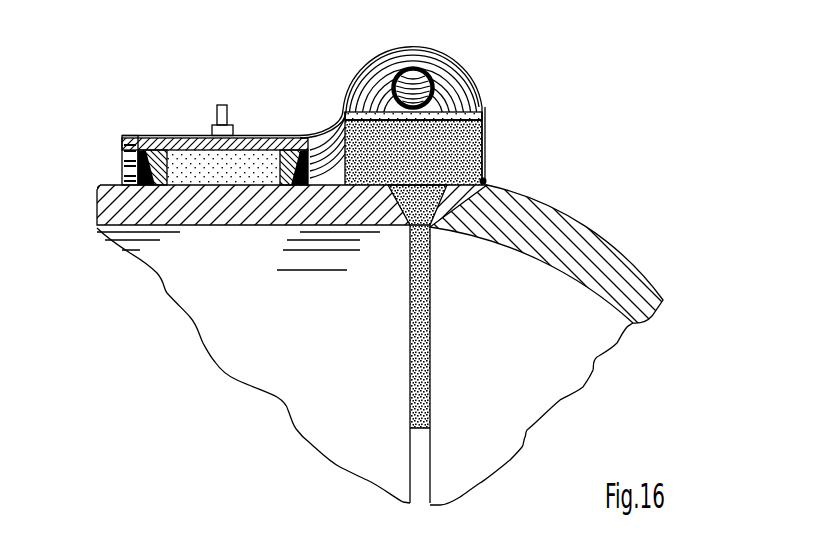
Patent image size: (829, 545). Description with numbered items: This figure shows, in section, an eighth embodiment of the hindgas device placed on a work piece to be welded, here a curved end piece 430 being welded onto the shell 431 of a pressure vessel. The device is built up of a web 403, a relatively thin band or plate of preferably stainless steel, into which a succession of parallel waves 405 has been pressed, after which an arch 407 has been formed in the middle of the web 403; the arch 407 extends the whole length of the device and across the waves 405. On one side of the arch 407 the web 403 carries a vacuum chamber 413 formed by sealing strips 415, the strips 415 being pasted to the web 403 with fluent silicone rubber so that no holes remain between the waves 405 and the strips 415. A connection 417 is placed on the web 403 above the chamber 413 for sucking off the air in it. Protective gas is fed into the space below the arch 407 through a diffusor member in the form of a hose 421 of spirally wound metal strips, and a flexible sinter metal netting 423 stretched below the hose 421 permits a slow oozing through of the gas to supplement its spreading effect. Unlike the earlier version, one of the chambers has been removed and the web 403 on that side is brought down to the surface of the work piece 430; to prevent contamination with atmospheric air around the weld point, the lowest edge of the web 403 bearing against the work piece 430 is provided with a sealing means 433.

The web 403 is at (287, 135).
The waves 405 is at (122, 155).
The arch 407 is at (373, 73).
The vacuum chamber 413 is at (233, 186).
The sealing strips 415 is at (154, 135).
The connections 417 is at (217, 105).
The diffusor member (hose) 421 is at (435, 77).
The sinter metal netting 423 is at (482, 133).
The work piece (curved end piece) 430 is at (575, 228).
The shell 431 is at (107, 202).
The sealing means 433 is at (486, 180).